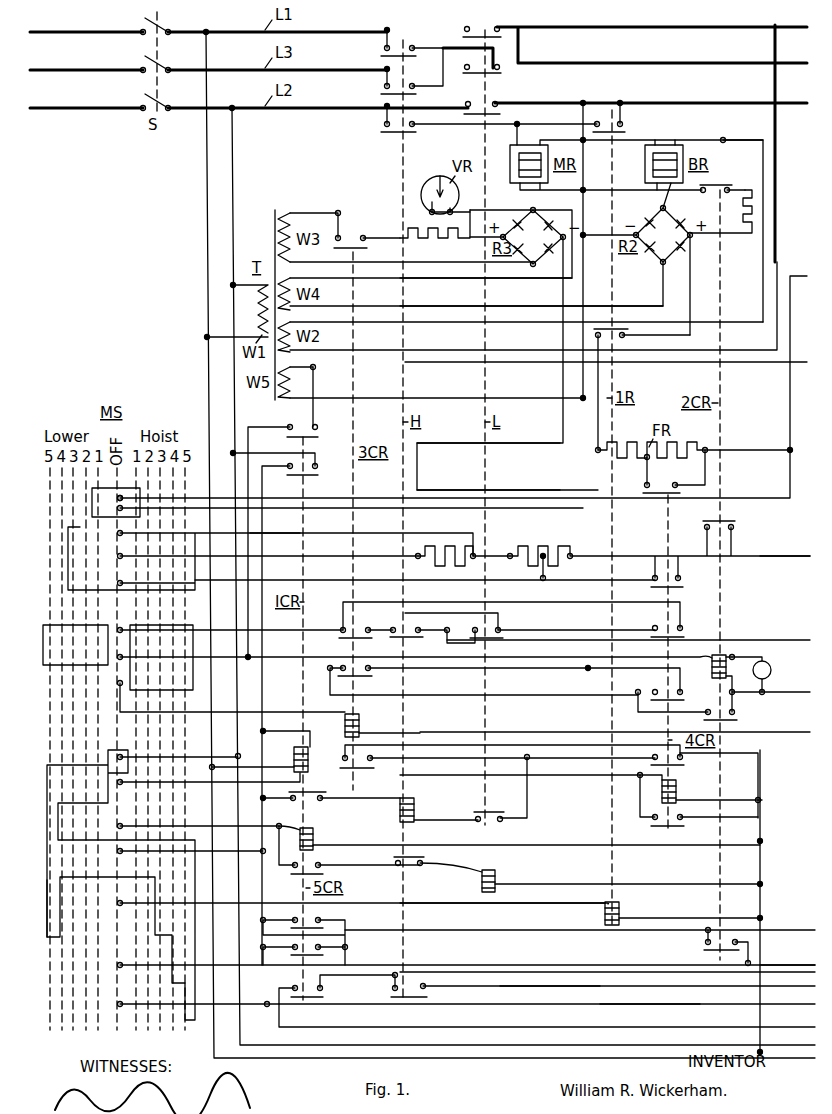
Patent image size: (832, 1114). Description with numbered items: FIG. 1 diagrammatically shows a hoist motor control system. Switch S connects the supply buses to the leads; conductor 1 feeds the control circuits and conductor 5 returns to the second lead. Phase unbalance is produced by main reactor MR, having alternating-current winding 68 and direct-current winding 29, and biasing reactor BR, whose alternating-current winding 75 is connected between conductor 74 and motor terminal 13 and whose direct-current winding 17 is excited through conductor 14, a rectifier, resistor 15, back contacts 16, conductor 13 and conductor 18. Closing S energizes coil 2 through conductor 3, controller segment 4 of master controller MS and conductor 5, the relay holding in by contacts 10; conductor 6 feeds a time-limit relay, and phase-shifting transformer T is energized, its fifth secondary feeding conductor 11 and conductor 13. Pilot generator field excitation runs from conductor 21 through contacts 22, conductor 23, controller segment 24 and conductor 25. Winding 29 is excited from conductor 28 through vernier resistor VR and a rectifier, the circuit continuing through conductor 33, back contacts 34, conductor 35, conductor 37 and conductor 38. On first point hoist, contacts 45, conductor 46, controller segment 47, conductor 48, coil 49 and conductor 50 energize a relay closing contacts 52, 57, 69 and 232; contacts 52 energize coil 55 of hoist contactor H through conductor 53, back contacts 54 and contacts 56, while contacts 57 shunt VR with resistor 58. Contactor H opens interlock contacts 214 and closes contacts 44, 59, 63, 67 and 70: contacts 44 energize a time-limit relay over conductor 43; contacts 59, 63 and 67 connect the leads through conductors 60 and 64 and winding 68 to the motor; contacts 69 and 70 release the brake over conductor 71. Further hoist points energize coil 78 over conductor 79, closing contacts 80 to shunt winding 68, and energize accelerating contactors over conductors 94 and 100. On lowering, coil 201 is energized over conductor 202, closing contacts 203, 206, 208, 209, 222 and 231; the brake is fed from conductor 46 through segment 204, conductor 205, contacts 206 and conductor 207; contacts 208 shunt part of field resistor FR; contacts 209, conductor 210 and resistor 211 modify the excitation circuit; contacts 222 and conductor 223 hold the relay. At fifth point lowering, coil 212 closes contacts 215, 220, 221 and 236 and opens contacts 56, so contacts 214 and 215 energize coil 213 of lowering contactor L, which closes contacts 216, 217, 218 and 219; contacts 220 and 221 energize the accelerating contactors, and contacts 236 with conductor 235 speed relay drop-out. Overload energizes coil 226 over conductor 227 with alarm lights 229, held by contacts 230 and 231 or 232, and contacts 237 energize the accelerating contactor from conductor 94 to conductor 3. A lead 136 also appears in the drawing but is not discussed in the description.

The conductor 1 is at (205, 240).
The actuating coil 2 is at (314, 765).
The conductor 3 is at (266, 683).
The controller segment 4 is at (47, 940).
The conductor 5 is at (233, 152).
The conductor 6 is at (343, 978).
The contacts 10 is at (318, 468).
The conductor 11 is at (318, 370).
The conductor 13 is at (805, 104).
The conductor 14 is at (424, 279).
The resistor 15 is at (760, 190).
The back contacts 16 is at (722, 183).
The direct-current winding 17 is at (668, 193).
The conductor 18 is at (517, 307).
The conductor 21 is at (690, 281).
The contacts 22 is at (625, 329).
The conductor 23 is at (519, 491).
The controller segment 24 is at (92, 500).
The conductor 25 is at (804, 270).
The conductor 28 is at (342, 205).
The direct-current winding 29 is at (535, 190).
The conductor 33 is at (768, 558).
The back contacts 34 is at (716, 531).
The conductor 35 is at (512, 583).
The conductor 37 is at (417, 470).
The conductor 38 is at (452, 256).
The conductor 43 is at (630, 990).
The contacts 44 is at (392, 994).
The contacts 45 is at (307, 428).
The conductor 46 is at (270, 660).
The controller segment 47 is at (191, 627).
The conductor 48 is at (275, 713).
The actuating coil 49 is at (366, 722).
The conductor 50 is at (807, 734).
The contacts 52 is at (372, 767).
The conductor 53 is at (527, 806).
The back contacts 54 is at (498, 826).
The actuating coil 55 is at (415, 803).
The contacts 56 is at (324, 797).
The contacts 57 is at (352, 236).
The resistor 58 is at (418, 230).
The contacts 59 is at (383, 50).
The conductor 60 is at (806, 64).
The contacts 63 is at (383, 88).
The conductor 64 is at (778, 27).
The contacts 67 is at (383, 126).
The alternating-current winding 68 is at (516, 148).
The contacts 69 is at (340, 638).
The contacts 70 is at (414, 637).
The conductor 71 is at (777, 641).
The conductor 74 is at (723, 139).
The alternating-current winding 75 is at (662, 146).
The actuating coil 78 is at (626, 906).
The conductor 79 is at (460, 905).
The contacts 80 is at (622, 128).
The conductor 94 is at (806, 962).
The conductor 100 is at (688, 1001).
The conductor 136 is at (196, 533).
The actuating coil 201 is at (678, 783).
The conductor 202 is at (553, 781).
The contacts 203 is at (683, 761).
The controller segment 204 is at (105, 625).
The conductor 205 is at (432, 606).
The contacts 206 is at (683, 626).
The conductor 207 is at (549, 628).
The contacts 208 is at (668, 481).
The contacts 209 is at (684, 581).
The conductor 210 is at (305, 533).
The resistor 211 is at (447, 565).
The actuating coil 212 is at (315, 833).
The actuating coil 213 is at (497, 872).
The electric interlock contacts 214 is at (414, 871).
The contacts 215 is at (323, 871).
The contacts 216 is at (476, 29).
The contacts 217 is at (474, 68).
The contacts 218 is at (500, 106).
The contacts 219 is at (500, 625).
The contacts 220 is at (323, 923).
The contacts 221 is at (349, 949).
The contacts 222 is at (683, 830).
The conductor 223 is at (805, 812).
The actuating coil 226 is at (716, 679).
The conductor 227 is at (806, 698).
The alarm or lights 229 is at (771, 664).
The contacts 230 is at (737, 716).
The contacts 231 is at (655, 692).
The contacts 232 is at (372, 681).
The conductor 235 is at (750, 1023).
The contacts 236 is at (298, 986).
The contacts 237 is at (704, 948).